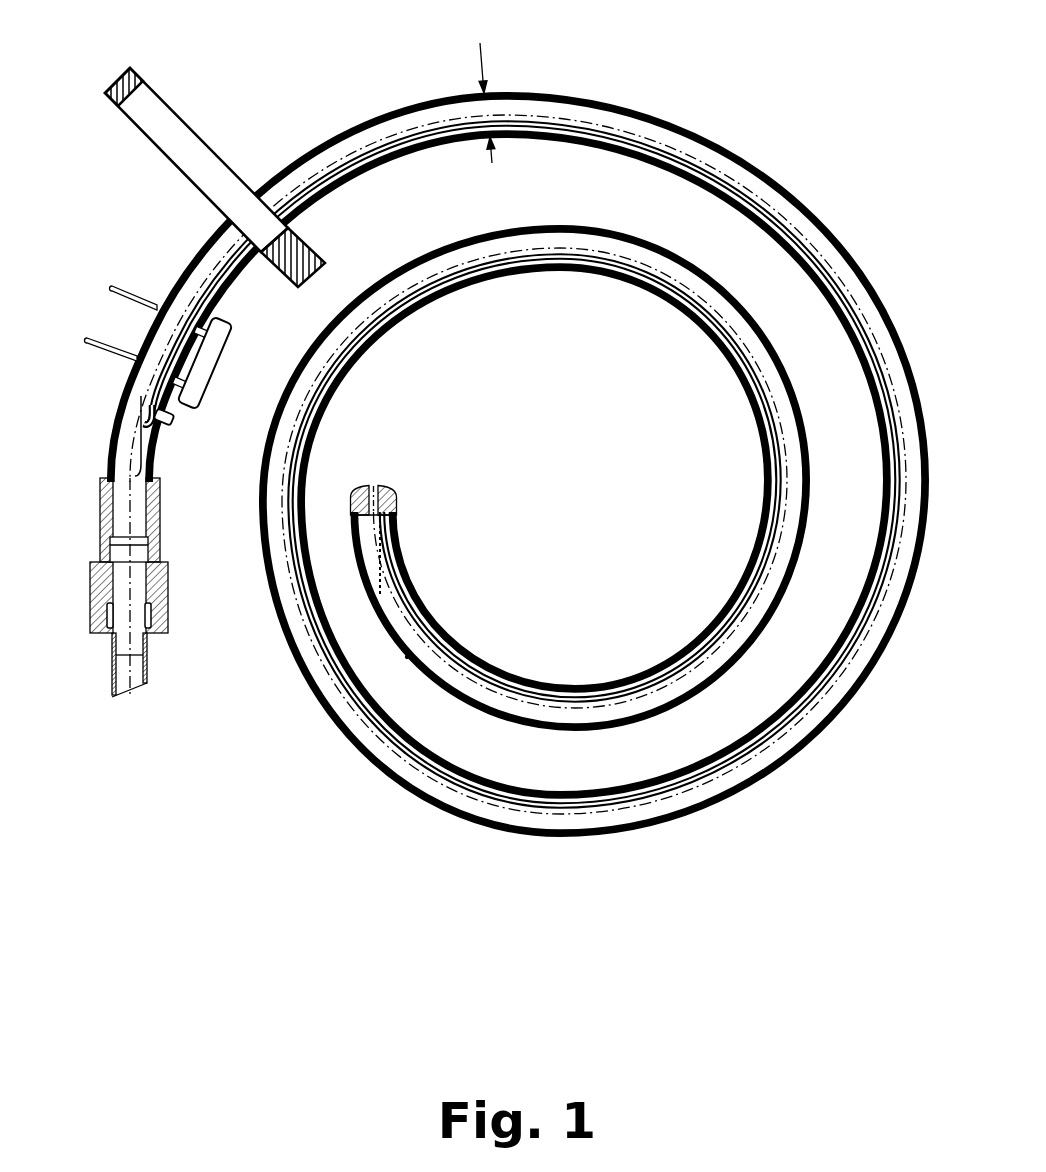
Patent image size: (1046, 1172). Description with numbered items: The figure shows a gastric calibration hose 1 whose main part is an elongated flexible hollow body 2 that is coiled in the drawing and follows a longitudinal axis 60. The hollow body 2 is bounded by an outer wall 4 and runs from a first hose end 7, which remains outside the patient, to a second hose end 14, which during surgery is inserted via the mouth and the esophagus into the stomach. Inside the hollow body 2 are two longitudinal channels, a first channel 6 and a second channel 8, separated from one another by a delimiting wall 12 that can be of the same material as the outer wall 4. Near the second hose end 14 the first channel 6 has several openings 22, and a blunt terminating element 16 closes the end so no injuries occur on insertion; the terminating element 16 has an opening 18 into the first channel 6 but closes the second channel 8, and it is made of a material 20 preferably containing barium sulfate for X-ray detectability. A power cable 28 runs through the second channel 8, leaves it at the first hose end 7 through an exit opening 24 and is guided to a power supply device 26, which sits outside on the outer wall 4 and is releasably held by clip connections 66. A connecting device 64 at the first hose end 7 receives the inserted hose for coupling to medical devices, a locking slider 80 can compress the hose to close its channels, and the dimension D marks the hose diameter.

The gastric calibration hose 1 is at (497, 418).
The elongated flexible hollow body 2 is at (497, 418).
The outer wall 4 is at (497, 424).
The first channel 6 is at (130, 410).
The first hose end 7 is at (497, 424).
The second channel 8 is at (145, 442).
The delimiting wall 12 is at (138, 448).
The second hose end 14 is at (321, 536).
The terminating element 16 is at (428, 445).
The opening 18 is at (398, 488).
The material 20 is at (360, 487).
The opening 22 is at (407, 657).
The exit opening 24 is at (165, 435).
The power supply device 26 is at (212, 355).
The power cable 28 is at (177, 420).
The longitudinal axis 60 is at (660, 135).
The connecting device 64 is at (160, 602).
The clip connection 66 is at (88, 338).
The locking slider 80 is at (221, 115).
The diameter D is at (470, 101).